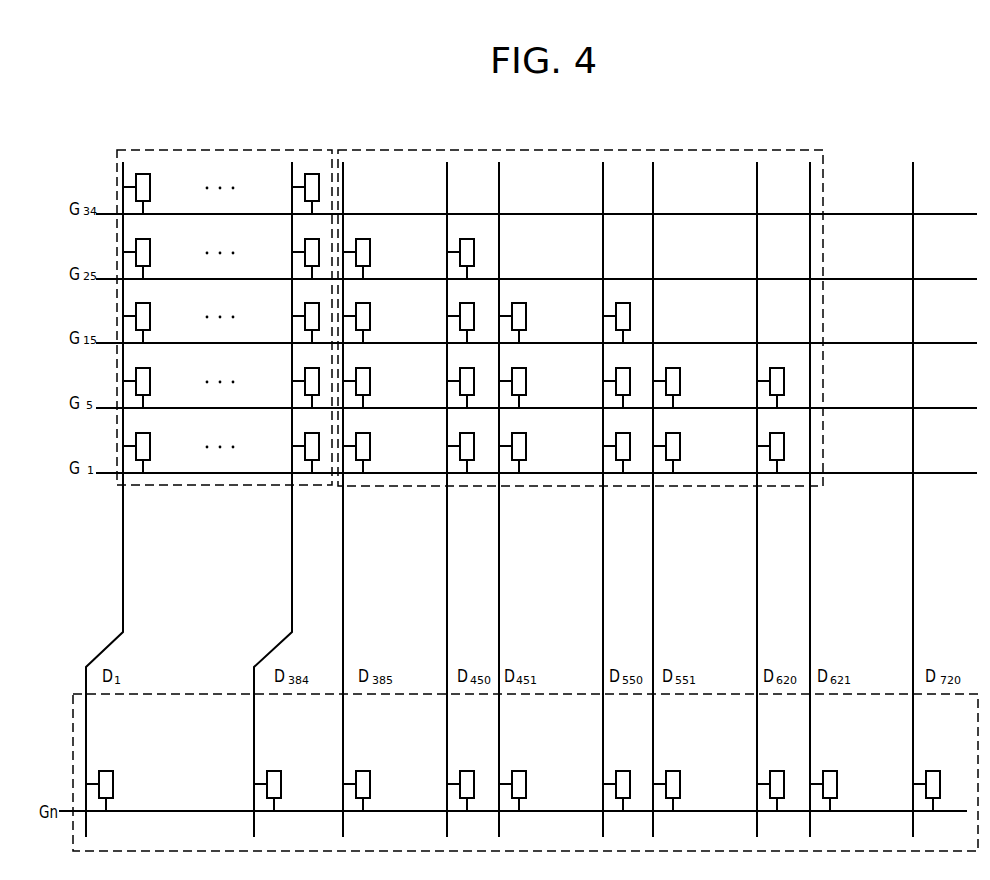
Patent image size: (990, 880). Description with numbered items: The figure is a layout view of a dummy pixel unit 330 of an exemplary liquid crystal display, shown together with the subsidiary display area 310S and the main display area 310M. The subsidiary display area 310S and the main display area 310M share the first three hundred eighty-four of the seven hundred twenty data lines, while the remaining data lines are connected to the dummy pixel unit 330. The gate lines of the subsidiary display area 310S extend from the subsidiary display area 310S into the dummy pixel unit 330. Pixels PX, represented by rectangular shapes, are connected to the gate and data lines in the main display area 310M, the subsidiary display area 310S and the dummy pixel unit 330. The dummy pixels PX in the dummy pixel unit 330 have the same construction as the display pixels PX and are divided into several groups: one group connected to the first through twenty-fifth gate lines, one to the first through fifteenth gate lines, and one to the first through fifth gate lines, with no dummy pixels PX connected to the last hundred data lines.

The subsidiary display area 310S is at (178, 143).
The dummy pixel unit 330 is at (747, 147).
The main display area 310M is at (73, 727).
The pixel PX is at (147, 174).